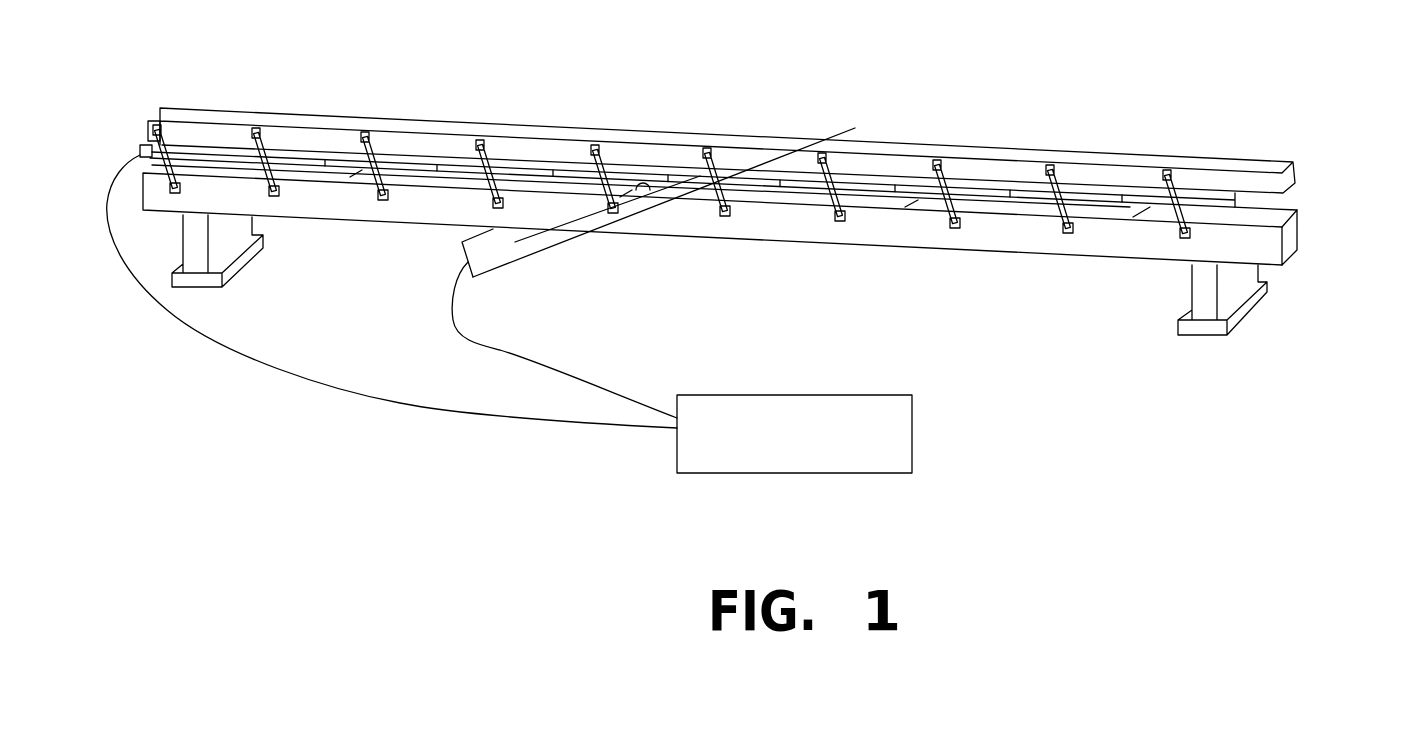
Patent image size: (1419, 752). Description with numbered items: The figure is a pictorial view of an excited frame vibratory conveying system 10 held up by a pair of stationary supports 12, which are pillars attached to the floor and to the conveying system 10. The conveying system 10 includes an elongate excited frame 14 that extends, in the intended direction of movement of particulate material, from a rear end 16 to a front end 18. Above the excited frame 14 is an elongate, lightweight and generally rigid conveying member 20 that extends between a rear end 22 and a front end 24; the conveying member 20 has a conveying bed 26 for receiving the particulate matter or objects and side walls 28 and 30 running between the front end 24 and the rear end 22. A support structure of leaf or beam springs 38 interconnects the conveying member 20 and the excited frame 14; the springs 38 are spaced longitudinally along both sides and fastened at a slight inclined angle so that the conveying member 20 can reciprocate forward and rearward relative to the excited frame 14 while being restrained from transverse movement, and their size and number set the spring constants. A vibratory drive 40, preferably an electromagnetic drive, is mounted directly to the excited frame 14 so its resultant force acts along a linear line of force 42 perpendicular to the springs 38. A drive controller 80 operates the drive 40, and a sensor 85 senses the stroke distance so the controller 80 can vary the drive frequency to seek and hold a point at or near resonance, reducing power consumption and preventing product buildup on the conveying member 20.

The excited frame vibratory conveying system 10 is at (370, 525).
The stationary supports 12 is at (230, 232).
The excited frame 14 is at (688, 215).
The rear end 16 is at (143, 190).
The front end 18 is at (1302, 237).
The conveying member 20 is at (1093, 138).
The rear end 22 is at (150, 137).
The front end 24 is at (1295, 178).
The conveying bed 26 is at (1293, 190).
The side wall 28 is at (563, 148).
The side wall 30 is at (912, 148).
The leaf or beam springs 38 is at (378, 155).
The vibratory drive 40 is at (490, 258).
The linear line of force 42 is at (853, 132).
The drive controller 80 is at (677, 440).
The sensor 85 is at (140, 150).